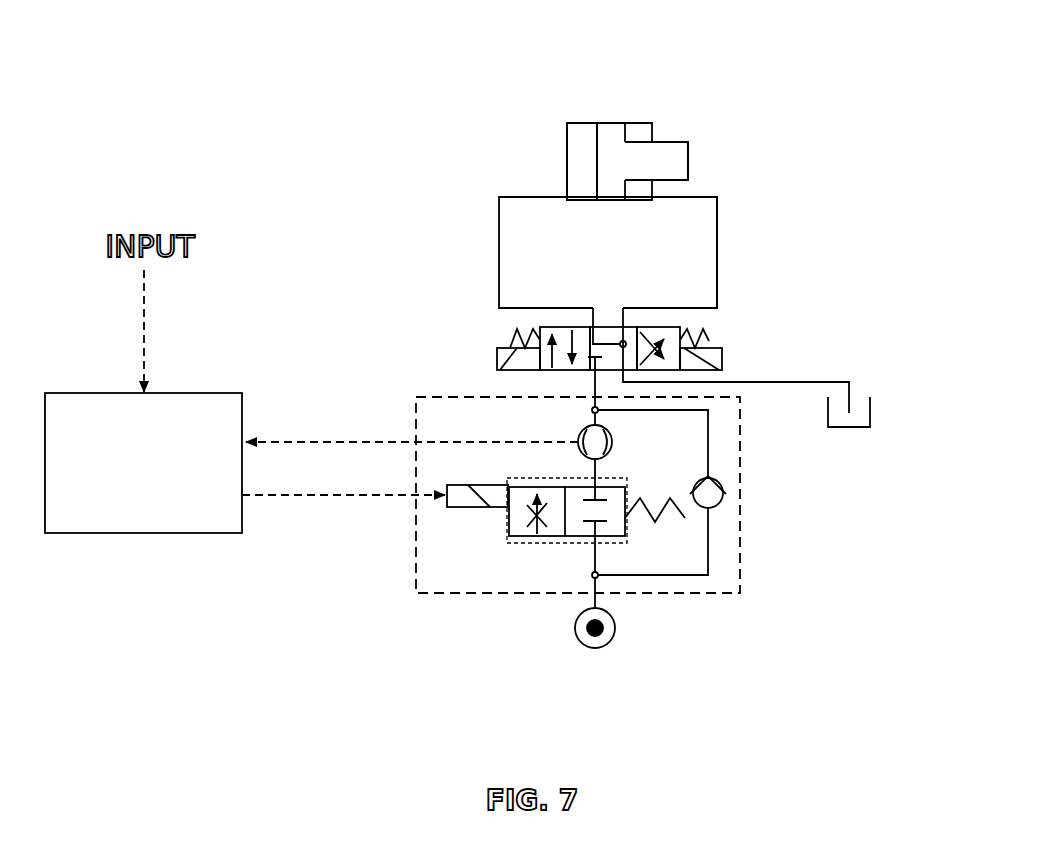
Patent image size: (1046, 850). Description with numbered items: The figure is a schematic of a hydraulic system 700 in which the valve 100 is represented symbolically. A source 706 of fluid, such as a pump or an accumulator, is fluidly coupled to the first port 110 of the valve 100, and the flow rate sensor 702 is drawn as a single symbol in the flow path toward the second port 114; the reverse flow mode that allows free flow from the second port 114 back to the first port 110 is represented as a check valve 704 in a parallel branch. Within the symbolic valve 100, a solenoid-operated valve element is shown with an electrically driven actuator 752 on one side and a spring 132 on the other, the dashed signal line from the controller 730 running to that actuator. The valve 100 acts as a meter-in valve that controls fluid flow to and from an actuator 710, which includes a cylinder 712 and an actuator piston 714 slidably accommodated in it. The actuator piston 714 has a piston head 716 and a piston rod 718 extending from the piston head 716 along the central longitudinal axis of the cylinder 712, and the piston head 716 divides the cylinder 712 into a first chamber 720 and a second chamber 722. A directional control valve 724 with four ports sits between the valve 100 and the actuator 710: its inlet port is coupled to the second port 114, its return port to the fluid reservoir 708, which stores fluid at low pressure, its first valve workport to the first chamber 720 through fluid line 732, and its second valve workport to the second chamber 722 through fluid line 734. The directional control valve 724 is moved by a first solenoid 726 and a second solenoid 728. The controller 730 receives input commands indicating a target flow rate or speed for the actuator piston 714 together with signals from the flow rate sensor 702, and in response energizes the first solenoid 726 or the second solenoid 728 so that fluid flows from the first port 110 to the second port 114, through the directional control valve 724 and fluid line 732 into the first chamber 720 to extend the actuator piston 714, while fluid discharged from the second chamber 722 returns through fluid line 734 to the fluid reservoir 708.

The hydraulic system 700 is at (277, 140).
The controller 730 is at (143, 463).
The actuator 710 is at (573, 110).
The cylinder 712 is at (567, 157).
The actuator piston 714 is at (595, 171).
The piston head 716 is at (608, 137).
The piston rod 718 is at (675, 141).
The first chamber 720 is at (584, 128).
The second chamber 722 is at (641, 128).
The fluid line 732 is at (499, 258).
The fluid line 734 is at (717, 222).
The directional control valve 724 is at (627, 328).
The first solenoid 726 is at (497, 360).
The second solenoid 728 is at (722, 360).
The fluid reservoir 708 is at (870, 410).
The valve 100 is at (416, 396).
The second port 114 is at (592, 410).
The flow rate sensor 702 is at (612, 442).
The check valve 704 is at (727, 485).
The pressure control valve 752 is at (566, 555).
The spring 132 is at (660, 514).
The first port 110 is at (599, 580).
The source 706 is at (575, 628).